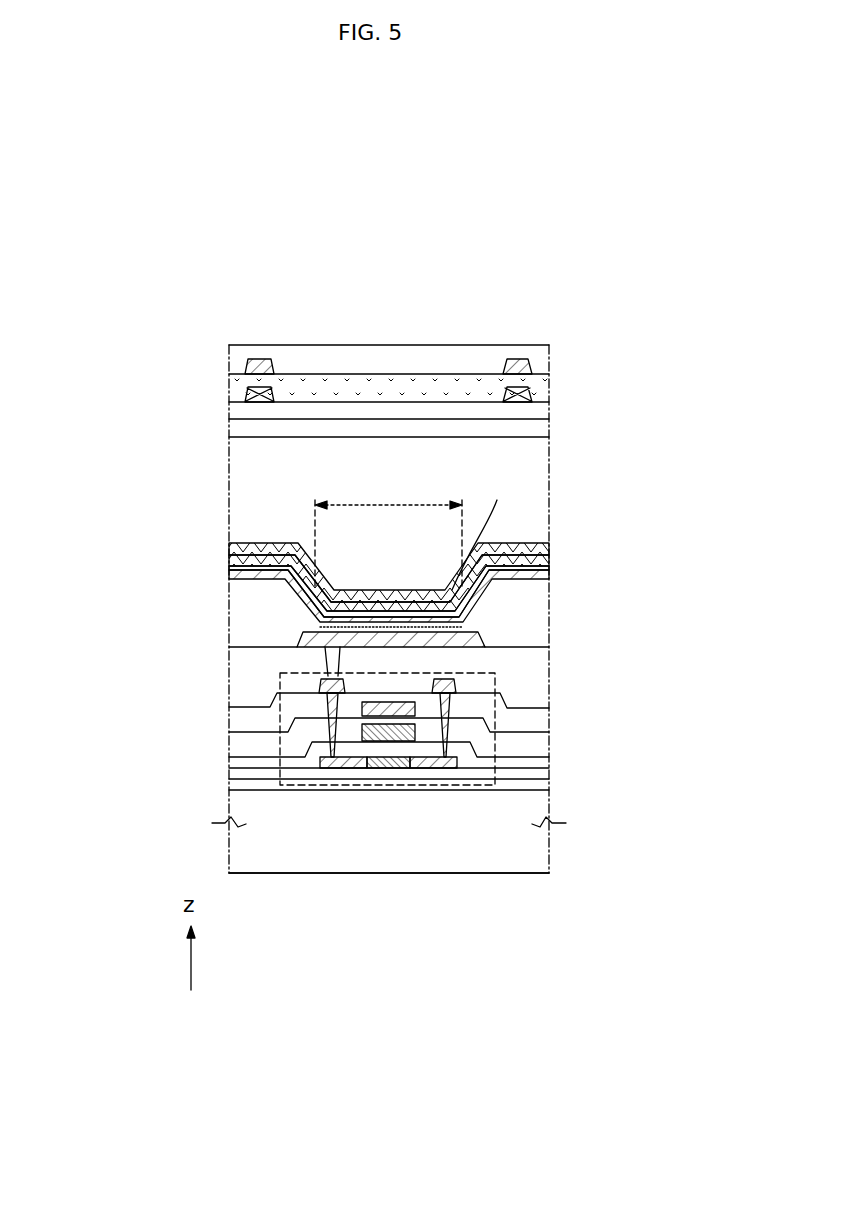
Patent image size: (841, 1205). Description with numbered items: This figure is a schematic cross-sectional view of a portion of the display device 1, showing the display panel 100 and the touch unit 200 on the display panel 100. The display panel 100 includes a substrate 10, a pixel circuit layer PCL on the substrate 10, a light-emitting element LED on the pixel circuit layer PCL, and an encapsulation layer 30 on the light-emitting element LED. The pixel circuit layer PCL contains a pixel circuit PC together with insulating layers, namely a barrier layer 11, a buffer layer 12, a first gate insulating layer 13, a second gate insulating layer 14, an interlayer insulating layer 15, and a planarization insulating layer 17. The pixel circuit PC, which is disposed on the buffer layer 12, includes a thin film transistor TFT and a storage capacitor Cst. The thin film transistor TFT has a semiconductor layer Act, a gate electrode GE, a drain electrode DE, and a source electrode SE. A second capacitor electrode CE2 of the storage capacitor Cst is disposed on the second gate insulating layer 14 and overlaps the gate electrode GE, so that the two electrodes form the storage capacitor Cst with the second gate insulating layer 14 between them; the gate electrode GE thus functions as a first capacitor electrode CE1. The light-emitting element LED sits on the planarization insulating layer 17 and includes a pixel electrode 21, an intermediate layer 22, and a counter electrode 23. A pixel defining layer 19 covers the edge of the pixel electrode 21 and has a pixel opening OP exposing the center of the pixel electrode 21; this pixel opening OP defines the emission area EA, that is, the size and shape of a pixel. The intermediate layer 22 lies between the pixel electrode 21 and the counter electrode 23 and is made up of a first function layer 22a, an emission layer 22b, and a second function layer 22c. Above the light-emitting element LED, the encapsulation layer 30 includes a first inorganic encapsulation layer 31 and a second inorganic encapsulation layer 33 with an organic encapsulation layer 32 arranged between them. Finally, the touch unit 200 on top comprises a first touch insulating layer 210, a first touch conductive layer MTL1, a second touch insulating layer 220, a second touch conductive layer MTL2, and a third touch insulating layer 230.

The display device 1 is at (617, 311).
The substrate 10 is at (240, 854).
The barrier layer 11 is at (240, 786).
The buffer layer 12 is at (240, 772).
The first gate insulating layer 13 is at (243, 764).
The second gate insulating layer 14 is at (243, 742).
The interlayer insulating layer 15 is at (245, 718).
The planarization insulating layer 17 is at (240, 657).
The pixel defining layer 19 is at (240, 622).
The pixel electrode 21 is at (478, 640).
The intermediate layer 22 is at (616, 555).
The first function layer 22a is at (450, 626).
The emission layer 22b is at (463, 615).
The second function layer 22c is at (470, 600).
The counter electrode 23 is at (483, 585).
The encapsulation layer 30 is at (169, 427).
The first inorganic encapsulation layer 31 is at (240, 548).
The organic encapsulation layer 32 is at (240, 490).
The second inorganic encapsulation layer 33 is at (240, 432).
The display panel 100 is at (99, 863).
The touch unit 200 is at (158, 342).
The first touch insulating layer 210 is at (240, 409).
The second touch insulating layer 220 is at (240, 384).
The third touch insulating layer 230 is at (240, 353).
The first touch conductive layer MTL1 is at (526, 390).
The second touch conductive layer MTL2 is at (508, 360).
The emission area EA is at (388, 533).
The pixel opening OP is at (483, 532).
The pixel circuit layer PCL is at (161, 613).
The light-emitting element LED is at (669, 530).
The thin film transistor TFT is at (495, 994).
The drain electrode DE is at (328, 740).
The source electrode SE is at (440, 748).
The gate electrode GE is at (380, 707).
The semiconductor layer Act is at (407, 762).
The storage capacitor Cst is at (420, 912).
The first capacitor electrode CE1 is at (388, 712).
The second capacitor electrode CE2 is at (370, 727).
The pixel circuit PC is at (483, 786).